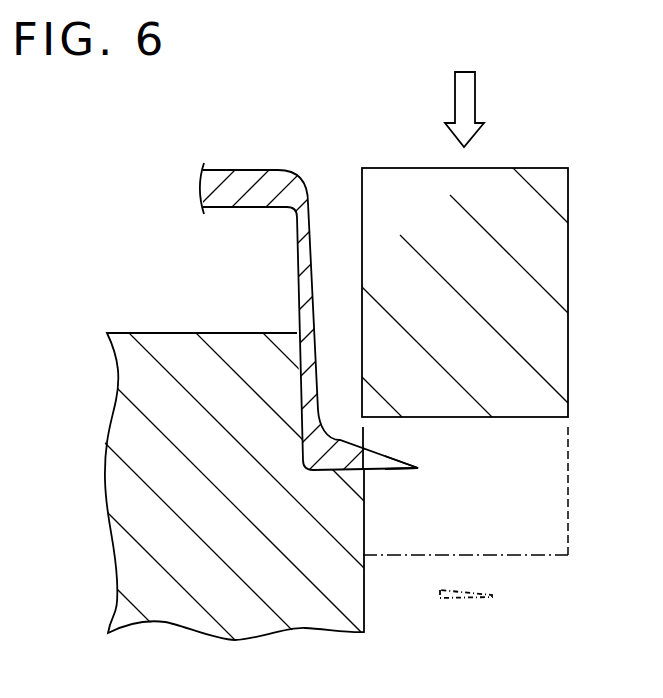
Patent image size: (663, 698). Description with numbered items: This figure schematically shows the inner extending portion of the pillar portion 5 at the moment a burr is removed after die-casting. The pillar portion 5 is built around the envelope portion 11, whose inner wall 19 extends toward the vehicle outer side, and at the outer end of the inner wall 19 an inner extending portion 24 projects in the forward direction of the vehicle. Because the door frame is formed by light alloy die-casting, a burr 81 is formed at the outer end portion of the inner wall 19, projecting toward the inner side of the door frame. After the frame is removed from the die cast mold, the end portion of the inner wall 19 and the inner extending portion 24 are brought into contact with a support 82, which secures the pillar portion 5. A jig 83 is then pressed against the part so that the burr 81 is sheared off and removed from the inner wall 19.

The pillar portion 5 is at (287, 170).
The envelope portion 11 is at (226, 198).
The inner wall 19 is at (302, 295).
The inner extending portion 24 is at (333, 462).
The burr 81 is at (390, 470).
The support 82 is at (128, 364).
The jig 83 is at (568, 387).